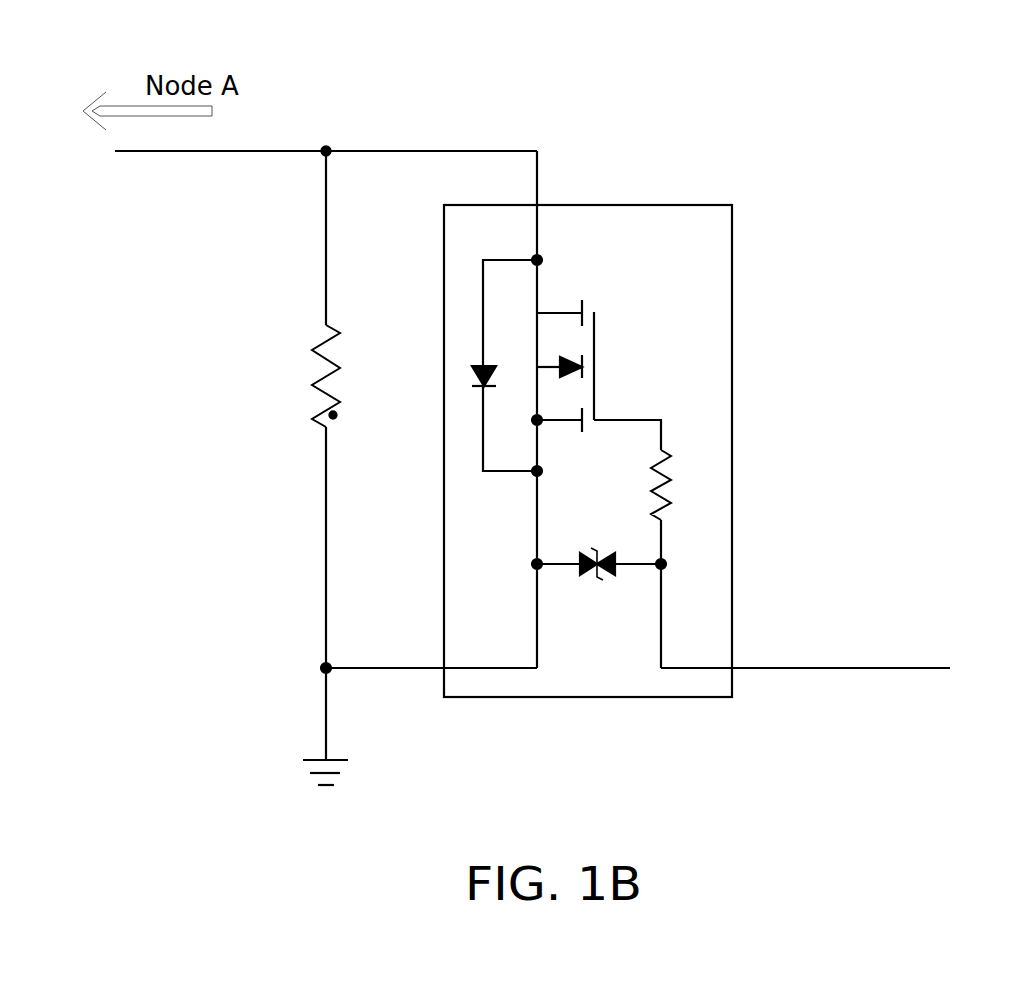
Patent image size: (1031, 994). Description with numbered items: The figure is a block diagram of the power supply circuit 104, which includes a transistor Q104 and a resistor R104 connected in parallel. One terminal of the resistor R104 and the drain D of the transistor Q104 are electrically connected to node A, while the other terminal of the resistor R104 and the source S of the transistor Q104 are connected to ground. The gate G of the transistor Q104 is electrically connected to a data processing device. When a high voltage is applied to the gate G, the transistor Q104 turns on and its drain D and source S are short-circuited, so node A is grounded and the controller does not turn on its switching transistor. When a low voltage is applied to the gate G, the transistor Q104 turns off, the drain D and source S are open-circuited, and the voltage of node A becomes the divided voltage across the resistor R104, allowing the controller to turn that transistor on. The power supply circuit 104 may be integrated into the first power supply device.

The power supply circuit 104 is at (988, 108).
The transistor Q104 is at (692, 174).
The resistor R104 is at (278, 373).